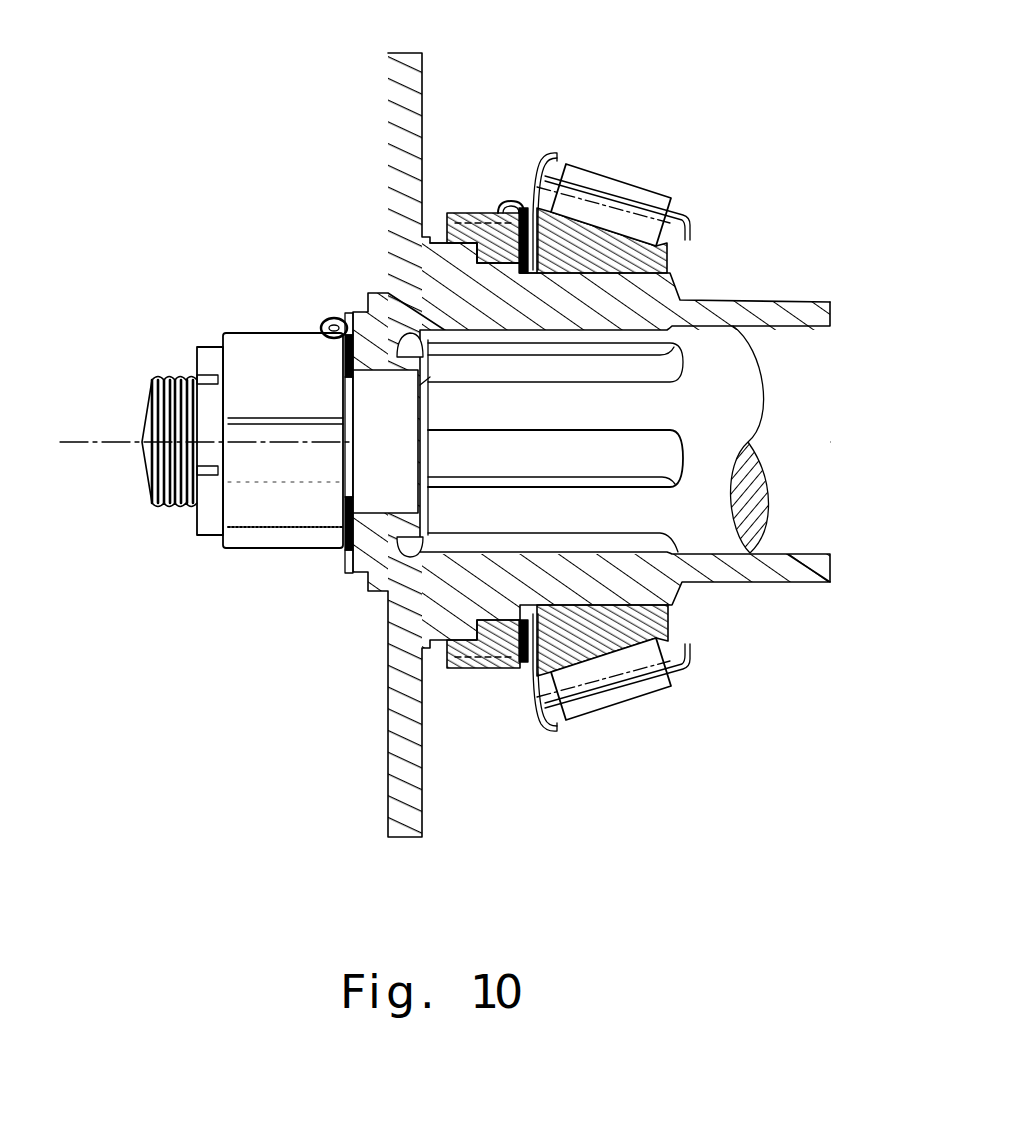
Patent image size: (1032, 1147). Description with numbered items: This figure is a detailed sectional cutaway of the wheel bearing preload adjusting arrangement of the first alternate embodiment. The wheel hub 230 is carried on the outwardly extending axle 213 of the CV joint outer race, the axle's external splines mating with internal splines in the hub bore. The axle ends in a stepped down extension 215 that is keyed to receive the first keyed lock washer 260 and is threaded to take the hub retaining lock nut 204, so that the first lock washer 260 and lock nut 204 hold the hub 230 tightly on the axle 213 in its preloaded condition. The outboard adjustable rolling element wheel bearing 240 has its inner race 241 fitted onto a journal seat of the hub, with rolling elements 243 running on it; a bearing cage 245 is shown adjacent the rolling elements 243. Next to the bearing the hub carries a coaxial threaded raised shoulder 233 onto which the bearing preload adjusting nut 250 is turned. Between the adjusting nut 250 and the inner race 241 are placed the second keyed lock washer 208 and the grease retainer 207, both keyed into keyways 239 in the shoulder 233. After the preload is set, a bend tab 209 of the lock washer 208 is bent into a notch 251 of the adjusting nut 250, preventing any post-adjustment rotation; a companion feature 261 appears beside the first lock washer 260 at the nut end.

The hub retaining lock nut 204 is at (283, 553).
The grease retainer 207 is at (557, 143).
The second keyed lock washer 208 is at (507, 192).
The bend tabs 209 is at (523, 240).
The outwardly extending axle 213 is at (155, 372).
The stepped down extension 215 is at (182, 503).
The wheel hub 230 is at (612, 578).
The coaxial threaded raised shoulder 233 is at (489, 610).
The keyways 239 is at (488, 286).
The outboard adjustable rolling element wheel bearing 240 is at (622, 260).
The inner race 241 is at (602, 640).
The rolling elements 243 is at (604, 168).
The bearing cage 245 is at (692, 205).
The bearing preload adjusting nut 250 is at (465, 200).
The notch 251 is at (488, 642).
The first keyed lock washer 260 is at (336, 303).
The O-ring 261 is at (334, 328).